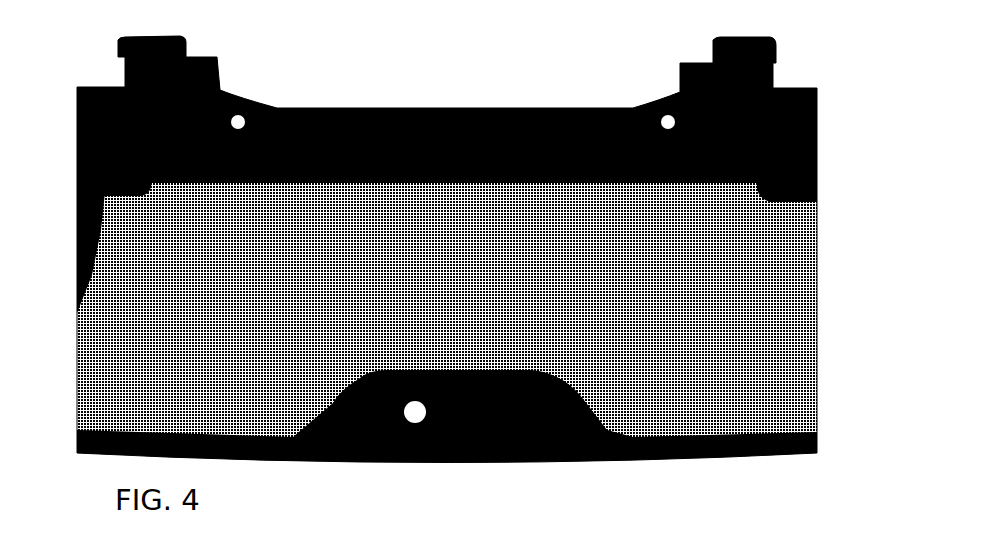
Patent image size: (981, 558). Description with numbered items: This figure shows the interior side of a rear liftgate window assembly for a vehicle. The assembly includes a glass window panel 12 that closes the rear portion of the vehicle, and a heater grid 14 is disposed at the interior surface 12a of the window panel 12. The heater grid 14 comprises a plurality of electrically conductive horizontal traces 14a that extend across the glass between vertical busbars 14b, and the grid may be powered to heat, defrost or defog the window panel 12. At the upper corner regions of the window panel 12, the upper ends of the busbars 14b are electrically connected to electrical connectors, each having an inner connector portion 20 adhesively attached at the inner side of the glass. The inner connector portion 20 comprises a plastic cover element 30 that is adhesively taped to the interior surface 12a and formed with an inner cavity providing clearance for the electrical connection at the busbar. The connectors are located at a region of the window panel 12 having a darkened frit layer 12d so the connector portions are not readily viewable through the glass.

The window panel 12 is at (802, 320).
The interior surface 12a is at (770, 438).
The frit layer 12d is at (817, 122).
The heater grid 14 is at (790, 374).
The conductive traces 14a is at (672, 398).
The busbars 14b is at (77, 307).
The inner connector portion 20 is at (112, 176).
The plastic cover element 30 is at (817, 183).